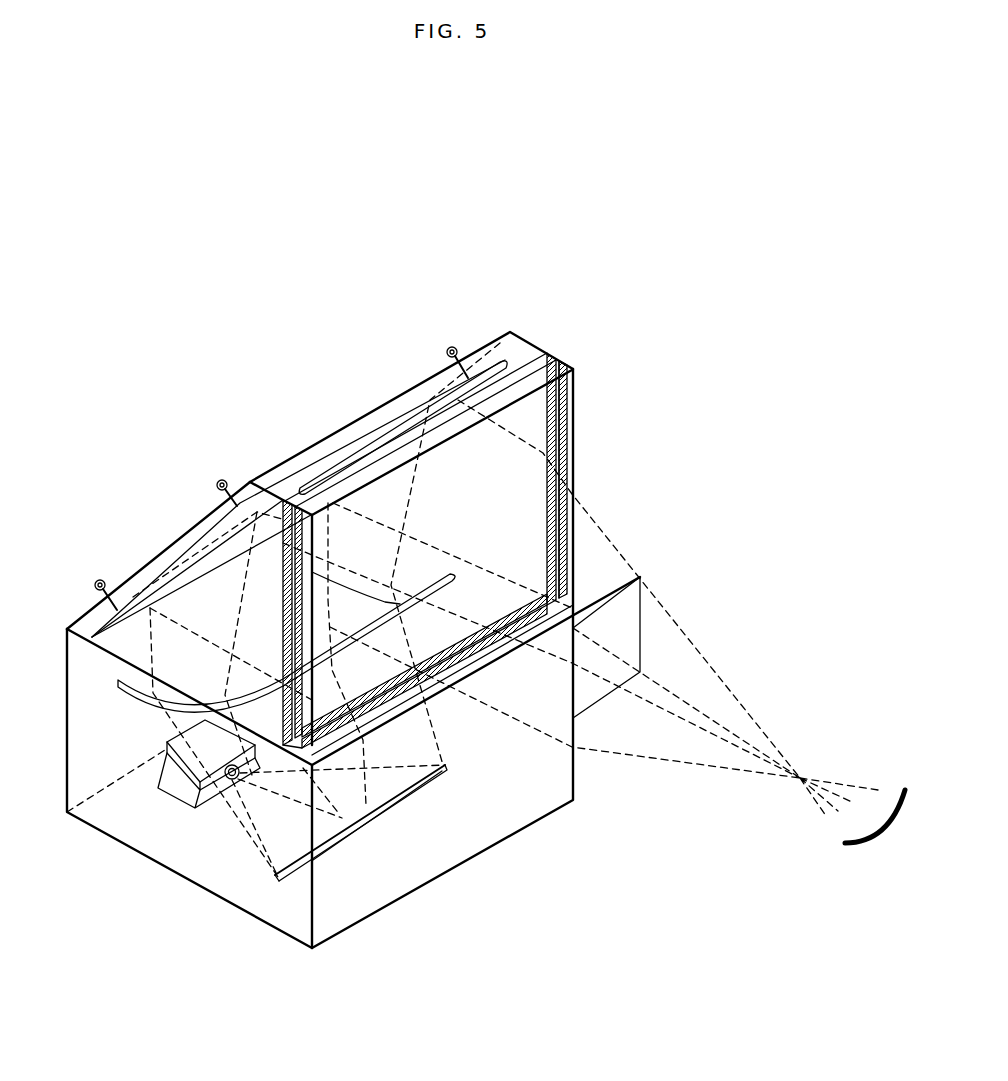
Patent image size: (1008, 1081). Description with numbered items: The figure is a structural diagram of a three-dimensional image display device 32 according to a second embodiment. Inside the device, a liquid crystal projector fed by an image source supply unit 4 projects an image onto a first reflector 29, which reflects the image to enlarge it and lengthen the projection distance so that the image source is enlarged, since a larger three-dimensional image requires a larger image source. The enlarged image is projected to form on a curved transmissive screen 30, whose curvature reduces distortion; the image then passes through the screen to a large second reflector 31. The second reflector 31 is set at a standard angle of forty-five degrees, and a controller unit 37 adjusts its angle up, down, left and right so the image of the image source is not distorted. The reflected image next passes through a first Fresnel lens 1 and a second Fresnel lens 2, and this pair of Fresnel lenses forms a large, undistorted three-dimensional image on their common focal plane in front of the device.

The first Fresnel lens 1 is at (553, 356).
The second Fresnel lens 2 is at (567, 400).
The image source supply unit 4 is at (170, 745).
The first reflector 29 is at (353, 830).
The curved transmissive screen 30 is at (118, 683).
The second reflector 31 is at (170, 570).
The three-dimensional image display device 32 is at (155, 868).
The controller unit 37 is at (447, 347).